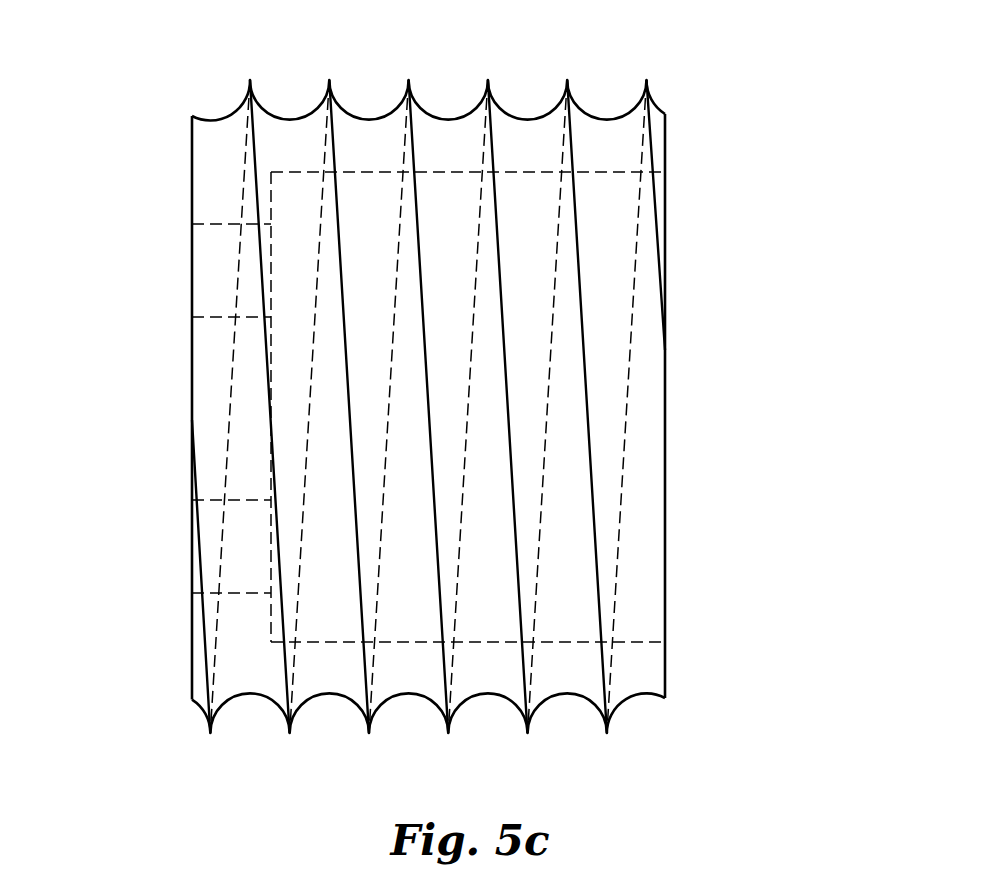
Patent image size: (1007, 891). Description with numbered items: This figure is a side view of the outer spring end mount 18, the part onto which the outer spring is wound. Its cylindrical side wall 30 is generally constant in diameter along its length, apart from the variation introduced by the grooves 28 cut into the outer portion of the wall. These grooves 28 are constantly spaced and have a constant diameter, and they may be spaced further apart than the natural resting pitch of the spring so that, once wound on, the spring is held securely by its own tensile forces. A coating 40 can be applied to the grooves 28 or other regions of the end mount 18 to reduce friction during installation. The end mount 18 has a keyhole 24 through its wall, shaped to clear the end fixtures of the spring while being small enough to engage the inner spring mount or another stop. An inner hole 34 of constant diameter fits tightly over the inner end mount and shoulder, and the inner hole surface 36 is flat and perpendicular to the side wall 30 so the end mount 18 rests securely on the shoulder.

The end mount 18 is at (450, 398).
The keyhole 24 is at (217, 317).
The grooves 28 is at (530, 218).
The cylindrical side wall 30 is at (340, 216).
The inner hole 34 is at (560, 642).
The inner hole surface 36 is at (267, 617).
The coating 40 is at (520, 133).